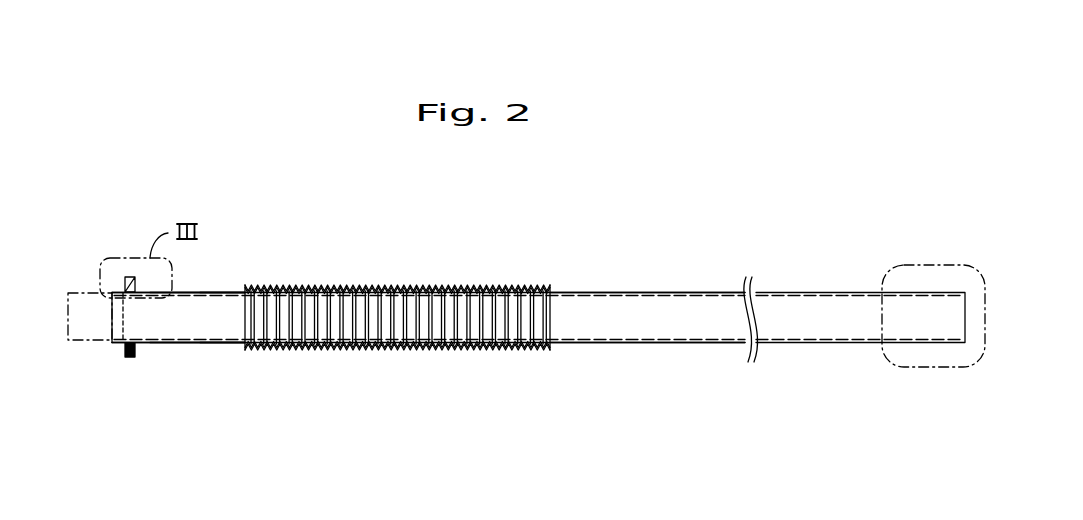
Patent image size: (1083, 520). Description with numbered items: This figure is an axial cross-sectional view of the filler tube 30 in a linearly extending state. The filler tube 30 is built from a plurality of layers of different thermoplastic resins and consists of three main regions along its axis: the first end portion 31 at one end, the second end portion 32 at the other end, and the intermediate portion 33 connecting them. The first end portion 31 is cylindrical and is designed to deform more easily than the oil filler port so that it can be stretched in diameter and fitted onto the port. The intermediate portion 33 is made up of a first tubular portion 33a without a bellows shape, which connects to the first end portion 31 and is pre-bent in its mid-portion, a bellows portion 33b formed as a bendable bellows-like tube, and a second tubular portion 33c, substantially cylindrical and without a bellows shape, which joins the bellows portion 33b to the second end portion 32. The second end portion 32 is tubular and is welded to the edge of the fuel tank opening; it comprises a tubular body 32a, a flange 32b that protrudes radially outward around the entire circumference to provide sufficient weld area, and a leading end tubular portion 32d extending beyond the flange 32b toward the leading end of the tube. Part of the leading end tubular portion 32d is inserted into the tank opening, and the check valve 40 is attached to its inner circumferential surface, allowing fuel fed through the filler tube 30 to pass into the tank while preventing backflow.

The filler tube 30 is at (822, 265).
The first end portion 31 is at (932, 368).
The second end portion 32 is at (237, 480).
The tubular body 32a is at (157, 347).
The flange 32b is at (132, 347).
The leading end tubular portion 32d is at (120, 347).
The intermediate portion 33 is at (662, 419).
The first tubular portion 33a is at (663, 343).
The bellows portion 33b is at (393, 347).
The second tubular portion 33c is at (222, 345).
The check valve 40 is at (80, 293).